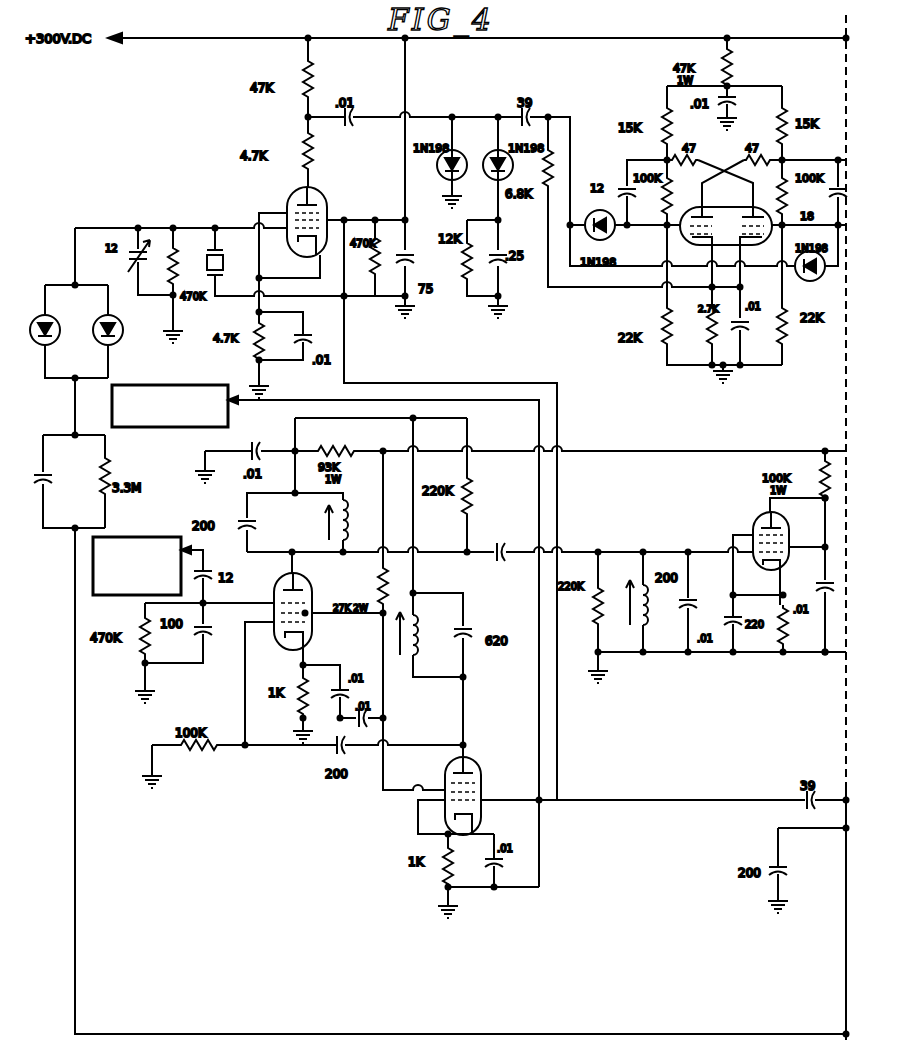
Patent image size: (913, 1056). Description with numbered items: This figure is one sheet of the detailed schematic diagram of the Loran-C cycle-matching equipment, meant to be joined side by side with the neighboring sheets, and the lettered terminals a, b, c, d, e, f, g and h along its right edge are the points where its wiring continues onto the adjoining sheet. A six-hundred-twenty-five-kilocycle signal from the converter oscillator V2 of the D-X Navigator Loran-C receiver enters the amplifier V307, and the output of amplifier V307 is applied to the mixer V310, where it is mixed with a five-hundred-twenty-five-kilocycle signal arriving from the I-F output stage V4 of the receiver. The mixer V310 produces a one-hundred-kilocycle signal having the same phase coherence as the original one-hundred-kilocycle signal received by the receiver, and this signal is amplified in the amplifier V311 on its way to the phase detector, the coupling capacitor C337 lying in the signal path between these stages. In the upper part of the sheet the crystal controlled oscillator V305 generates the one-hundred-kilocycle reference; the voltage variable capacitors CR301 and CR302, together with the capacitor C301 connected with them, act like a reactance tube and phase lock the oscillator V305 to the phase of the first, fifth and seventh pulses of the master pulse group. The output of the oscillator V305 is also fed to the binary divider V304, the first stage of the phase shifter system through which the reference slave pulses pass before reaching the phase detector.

The crystal controlled oscillator V305 is at (320, 220).
The binary divider V304 is at (724, 274).
The mixer V310 is at (305, 607).
The amplifier V307 is at (477, 792).
The amplifier V311 is at (749, 540).
The voltage variable capacitor CR301 is at (69, 331).
The voltage variable capacitor CR302 is at (122, 331).
The capacitor 100 C301 is at (69, 481).
The capacitor 30 C337 is at (493, 541).
The converter oscillator V2 is at (175, 406).
The I-F output stage V4 is at (142, 566).
The terminal a is at (843, 29).
The terminal b is at (842, 150).
The terminal c is at (832, 443).
The terminal d is at (832, 490).
The terminal e is at (832, 644).
The terminal f is at (840, 792).
The terminal g is at (840, 822).
The terminal h is at (838, 1026).